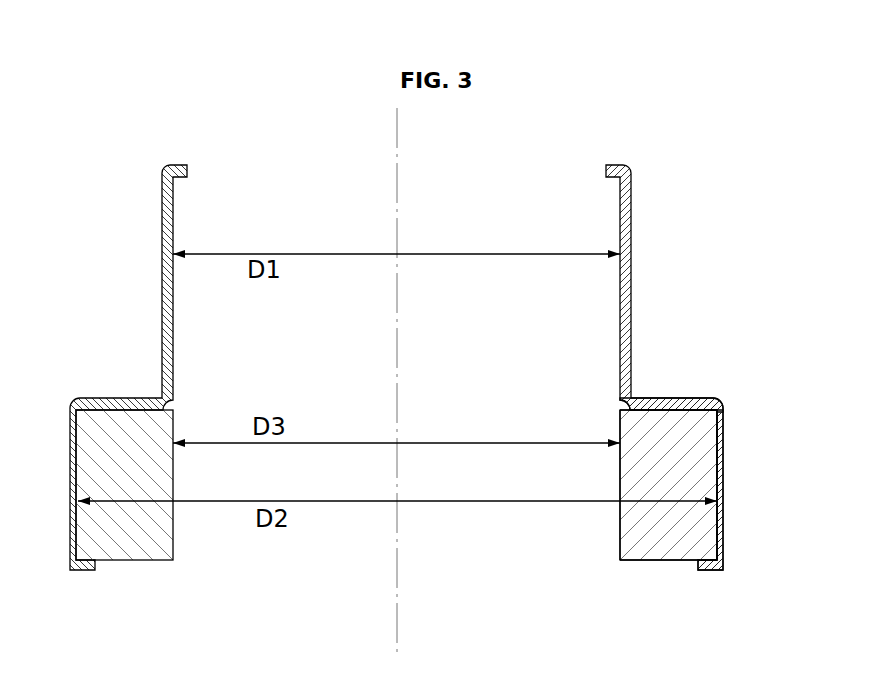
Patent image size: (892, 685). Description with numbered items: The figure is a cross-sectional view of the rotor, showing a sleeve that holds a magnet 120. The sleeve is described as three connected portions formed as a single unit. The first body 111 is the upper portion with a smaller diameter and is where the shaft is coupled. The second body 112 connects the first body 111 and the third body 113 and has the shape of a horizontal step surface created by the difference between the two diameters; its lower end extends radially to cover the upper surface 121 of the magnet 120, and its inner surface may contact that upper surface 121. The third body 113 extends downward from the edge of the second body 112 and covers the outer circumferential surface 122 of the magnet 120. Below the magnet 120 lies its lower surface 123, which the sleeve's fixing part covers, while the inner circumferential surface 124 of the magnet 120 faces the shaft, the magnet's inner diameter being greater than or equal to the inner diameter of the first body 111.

The first body 111 is at (634, 228).
The second body 112 is at (685, 398).
The third body 113 is at (727, 472).
The magnet 120 is at (641, 535).
The upper surface 121 is at (680, 410).
The outer circumferential surface 122 is at (712, 522).
The lower surface 123 is at (678, 563).
The inner circumferential surface 124 is at (620, 528).